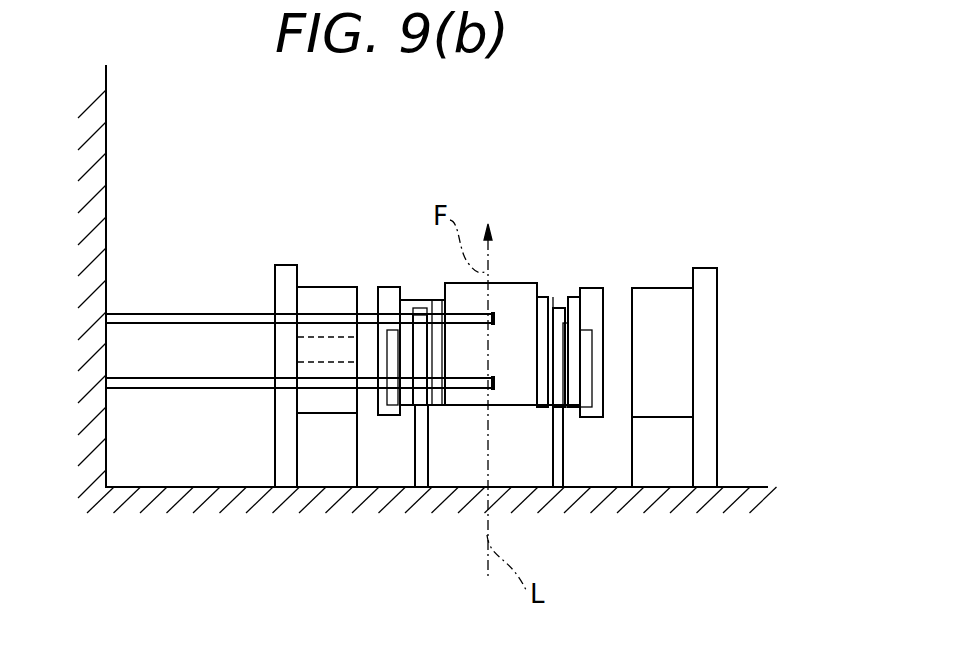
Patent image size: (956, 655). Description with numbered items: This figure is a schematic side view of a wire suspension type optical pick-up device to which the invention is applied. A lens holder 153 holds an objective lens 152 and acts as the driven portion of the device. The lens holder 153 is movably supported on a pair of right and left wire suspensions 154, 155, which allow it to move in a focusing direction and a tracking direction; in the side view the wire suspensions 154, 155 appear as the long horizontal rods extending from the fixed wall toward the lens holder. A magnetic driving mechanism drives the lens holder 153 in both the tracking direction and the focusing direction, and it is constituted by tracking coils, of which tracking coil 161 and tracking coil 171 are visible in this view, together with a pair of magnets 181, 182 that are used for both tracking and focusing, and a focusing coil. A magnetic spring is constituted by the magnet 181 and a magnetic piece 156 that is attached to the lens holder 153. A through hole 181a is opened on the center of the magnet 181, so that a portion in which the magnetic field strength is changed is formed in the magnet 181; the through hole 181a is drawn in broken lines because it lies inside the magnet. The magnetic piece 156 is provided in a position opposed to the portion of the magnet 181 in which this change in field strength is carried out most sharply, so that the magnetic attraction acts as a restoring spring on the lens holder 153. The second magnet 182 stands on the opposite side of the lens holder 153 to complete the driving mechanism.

The objective lens 152 is at (513, 288).
The lens holder 153 is at (540, 295).
The wire suspension 154 is at (215, 388).
The wire suspension 155 is at (148, 318).
The magnetic piece 156 is at (408, 290).
The tracking coil 161 is at (387, 416).
The tracking coil 171 is at (592, 418).
The magnet 181 is at (325, 297).
The through hole 181a is at (307, 352).
The magnet 182 is at (673, 325).